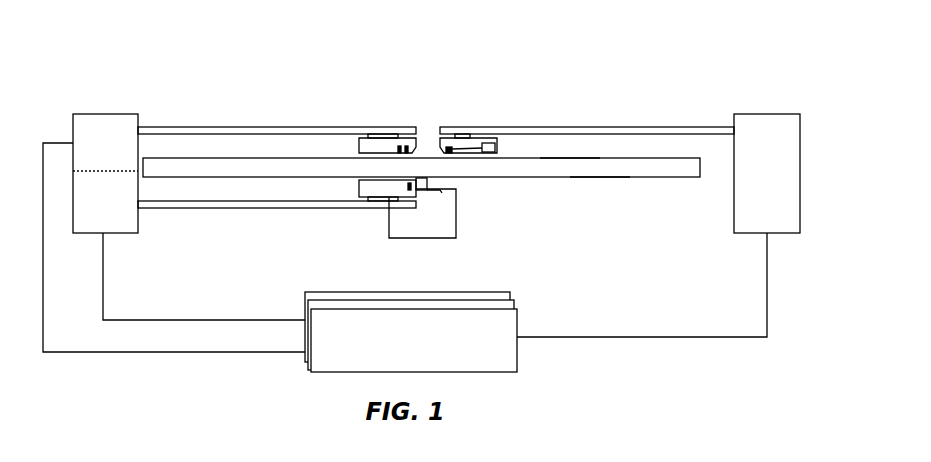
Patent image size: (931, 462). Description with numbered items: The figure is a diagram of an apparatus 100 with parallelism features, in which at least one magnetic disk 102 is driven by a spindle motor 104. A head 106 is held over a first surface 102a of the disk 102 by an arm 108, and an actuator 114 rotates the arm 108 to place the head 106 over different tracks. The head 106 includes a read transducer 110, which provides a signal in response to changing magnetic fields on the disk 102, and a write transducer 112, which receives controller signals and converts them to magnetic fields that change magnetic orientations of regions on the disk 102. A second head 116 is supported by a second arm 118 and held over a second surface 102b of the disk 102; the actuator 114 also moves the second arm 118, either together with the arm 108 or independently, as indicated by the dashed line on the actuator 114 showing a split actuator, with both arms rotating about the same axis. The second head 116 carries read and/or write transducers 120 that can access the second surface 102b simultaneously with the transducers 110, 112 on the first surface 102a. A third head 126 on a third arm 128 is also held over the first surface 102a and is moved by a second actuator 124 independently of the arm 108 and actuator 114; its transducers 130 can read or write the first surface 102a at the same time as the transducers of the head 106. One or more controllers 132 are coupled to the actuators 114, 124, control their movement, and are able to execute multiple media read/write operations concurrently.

The apparatus 100 is at (546, 58).
The magnetic disk 102 is at (660, 177).
The first surface 102a is at (570, 157).
The second surface 102b is at (598, 177).
The spindle motor 104 is at (403, 238).
The head 106 is at (370, 143).
The arm 108 is at (258, 127).
The read transducer 110 is at (408, 146).
The write transducer 112 is at (401, 146).
The actuator 114 is at (100, 113).
The second head 116 is at (368, 197).
The second arm 118 is at (247, 208).
The read and/or write transducers 120 is at (437, 191).
The second actuator 124 is at (758, 114).
The third head 126 is at (466, 138).
The third arm 128 is at (598, 127).
The read and/or write transducers 130 is at (497, 146).
The controllers 132 is at (480, 292).